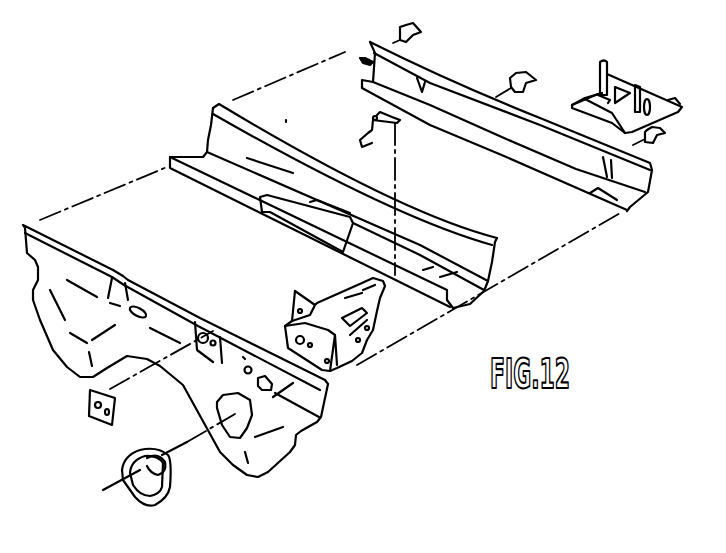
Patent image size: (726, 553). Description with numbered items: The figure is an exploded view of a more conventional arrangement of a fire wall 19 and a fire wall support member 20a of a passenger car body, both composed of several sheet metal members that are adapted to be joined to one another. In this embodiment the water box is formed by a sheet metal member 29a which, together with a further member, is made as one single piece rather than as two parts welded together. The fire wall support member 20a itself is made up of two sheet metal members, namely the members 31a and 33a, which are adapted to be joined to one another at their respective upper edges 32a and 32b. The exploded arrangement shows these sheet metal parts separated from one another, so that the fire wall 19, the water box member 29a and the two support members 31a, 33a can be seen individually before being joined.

The fire wall 19 is at (291, 449).
The fire wall support member 20a is at (288, 144).
The sheet metal member 29a is at (247, 190).
The sheet metal member 31a is at (497, 265).
The upper edge 32a is at (428, 217).
The upper edge 32b is at (457, 82).
The sheet metal member 33a is at (652, 180).